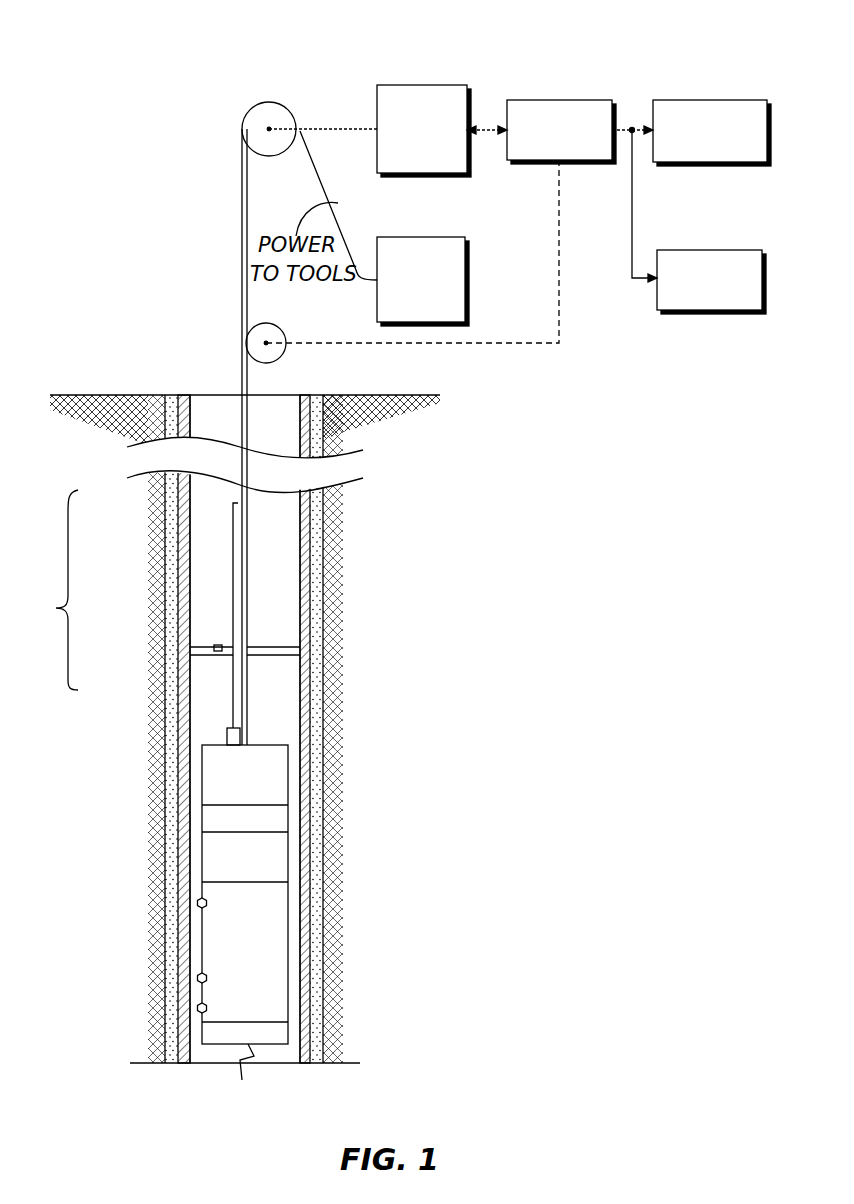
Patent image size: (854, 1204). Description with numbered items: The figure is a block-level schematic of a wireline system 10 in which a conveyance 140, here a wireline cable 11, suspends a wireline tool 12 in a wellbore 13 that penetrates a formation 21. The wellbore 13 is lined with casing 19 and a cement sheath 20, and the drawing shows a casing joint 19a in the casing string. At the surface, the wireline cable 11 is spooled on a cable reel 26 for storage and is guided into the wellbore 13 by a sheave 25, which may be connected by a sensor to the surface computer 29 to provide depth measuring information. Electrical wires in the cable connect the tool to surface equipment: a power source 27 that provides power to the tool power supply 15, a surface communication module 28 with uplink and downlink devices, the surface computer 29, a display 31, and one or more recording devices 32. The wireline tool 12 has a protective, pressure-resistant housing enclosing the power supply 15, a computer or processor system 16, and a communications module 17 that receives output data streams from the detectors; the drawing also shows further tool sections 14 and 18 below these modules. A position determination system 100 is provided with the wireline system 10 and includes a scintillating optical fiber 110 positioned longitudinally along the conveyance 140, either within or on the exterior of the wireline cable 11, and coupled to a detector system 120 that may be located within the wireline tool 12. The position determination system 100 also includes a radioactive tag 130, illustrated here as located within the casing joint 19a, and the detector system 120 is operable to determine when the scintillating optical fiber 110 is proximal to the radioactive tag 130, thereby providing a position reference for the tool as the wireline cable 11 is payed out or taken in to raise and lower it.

The wireline system 10 is at (120, 62).
The wireline cable 11 is at (253, 412).
The wireline tool 12 is at (247, 894).
The wellbore 13 is at (282, 542).
The tool body section 14 is at (288, 928).
The power supply 15 is at (202, 856).
The computer or processor system 16 is at (202, 818).
The communications module 17 is at (202, 778).
The lower tool section 18 is at (288, 1033).
The casing 19 is at (310, 574).
The casing joint 19a is at (303, 642).
The cement sheath 20 is at (323, 606).
The formation 21 is at (343, 774).
The sheave 25 is at (268, 362).
The cable reel 26 is at (270, 102).
The power source 27 is at (377, 300).
The surface communication module 28 is at (421, 85).
The surface computer 29 is at (560, 100).
The display 31 is at (712, 250).
The recording devices 32 is at (710, 100).
The position determination system 100 is at (226, 604).
The scintillating optical fiber 110 is at (233, 532).
The detector system 120 is at (227, 737).
The radioactive tag 130 is at (218, 647).
The conveyance 140 is at (242, 405).